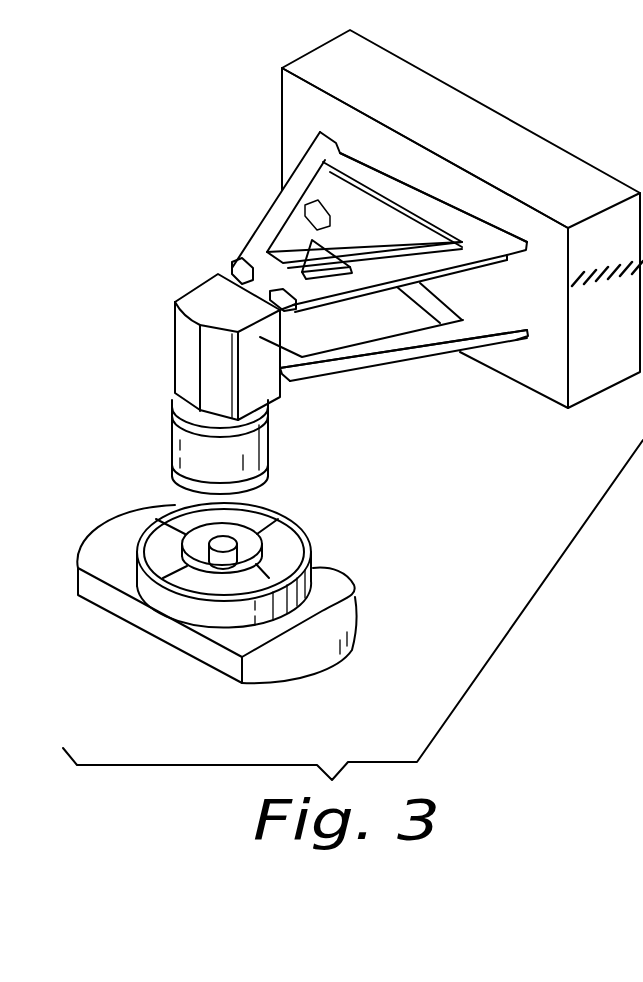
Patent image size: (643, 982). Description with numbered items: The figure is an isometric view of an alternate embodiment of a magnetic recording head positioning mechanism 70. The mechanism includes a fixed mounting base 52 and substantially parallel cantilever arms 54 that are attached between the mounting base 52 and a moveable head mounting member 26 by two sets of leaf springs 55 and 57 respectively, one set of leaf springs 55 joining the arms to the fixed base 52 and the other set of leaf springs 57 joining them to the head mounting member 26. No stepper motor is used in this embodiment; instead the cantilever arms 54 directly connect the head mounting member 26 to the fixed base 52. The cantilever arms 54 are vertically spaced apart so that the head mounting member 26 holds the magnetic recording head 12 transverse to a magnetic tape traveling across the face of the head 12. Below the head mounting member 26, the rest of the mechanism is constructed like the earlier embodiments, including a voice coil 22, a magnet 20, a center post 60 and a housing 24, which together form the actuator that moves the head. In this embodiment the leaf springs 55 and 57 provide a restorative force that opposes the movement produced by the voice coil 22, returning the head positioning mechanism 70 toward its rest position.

The magnetic recording head positioning mechanism 70 is at (176, 149).
The fixed mounting base 52 is at (523, 127).
The leaf springs 55 is at (320, 220).
The cantilever arms 54 is at (387, 348).
The leaf springs 57 is at (257, 285).
The head mounting member 26 is at (193, 286).
The magnetic recording head 12 is at (182, 348).
The voice coil 22 is at (170, 441).
The magnet 20 is at (170, 557).
The center post 60 is at (240, 555).
The housing 24 is at (175, 660).